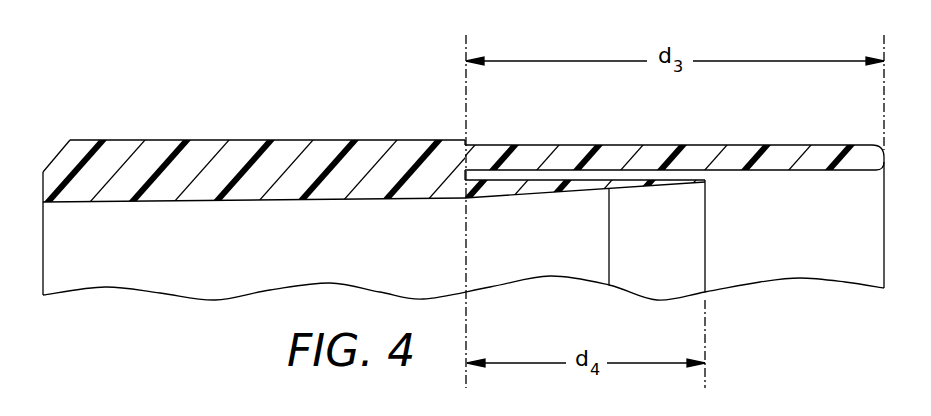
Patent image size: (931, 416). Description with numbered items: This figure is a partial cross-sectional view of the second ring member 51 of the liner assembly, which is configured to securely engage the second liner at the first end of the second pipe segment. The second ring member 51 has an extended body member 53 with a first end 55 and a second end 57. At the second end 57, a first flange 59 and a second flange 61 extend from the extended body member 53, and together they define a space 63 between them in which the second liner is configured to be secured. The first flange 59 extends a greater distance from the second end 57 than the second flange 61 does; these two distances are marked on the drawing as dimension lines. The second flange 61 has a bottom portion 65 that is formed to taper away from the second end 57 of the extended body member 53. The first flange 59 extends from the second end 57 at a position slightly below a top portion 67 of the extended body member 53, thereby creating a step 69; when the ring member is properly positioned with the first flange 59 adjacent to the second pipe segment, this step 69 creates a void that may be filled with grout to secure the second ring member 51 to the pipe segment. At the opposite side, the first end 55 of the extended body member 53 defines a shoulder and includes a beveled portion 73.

The second ring member 51 is at (202, 100).
The extended body member 53 is at (250, 147).
The first end 55 is at (42, 183).
The second end 57 is at (484, 169).
The first flange 59 is at (702, 147).
The second flange 61 is at (672, 185).
The space 63 is at (556, 177).
The bottom portion 65 is at (622, 190).
The top portion 67 is at (337, 140).
The step 69 is at (466, 140).
The beveled portion 73 is at (58, 150).